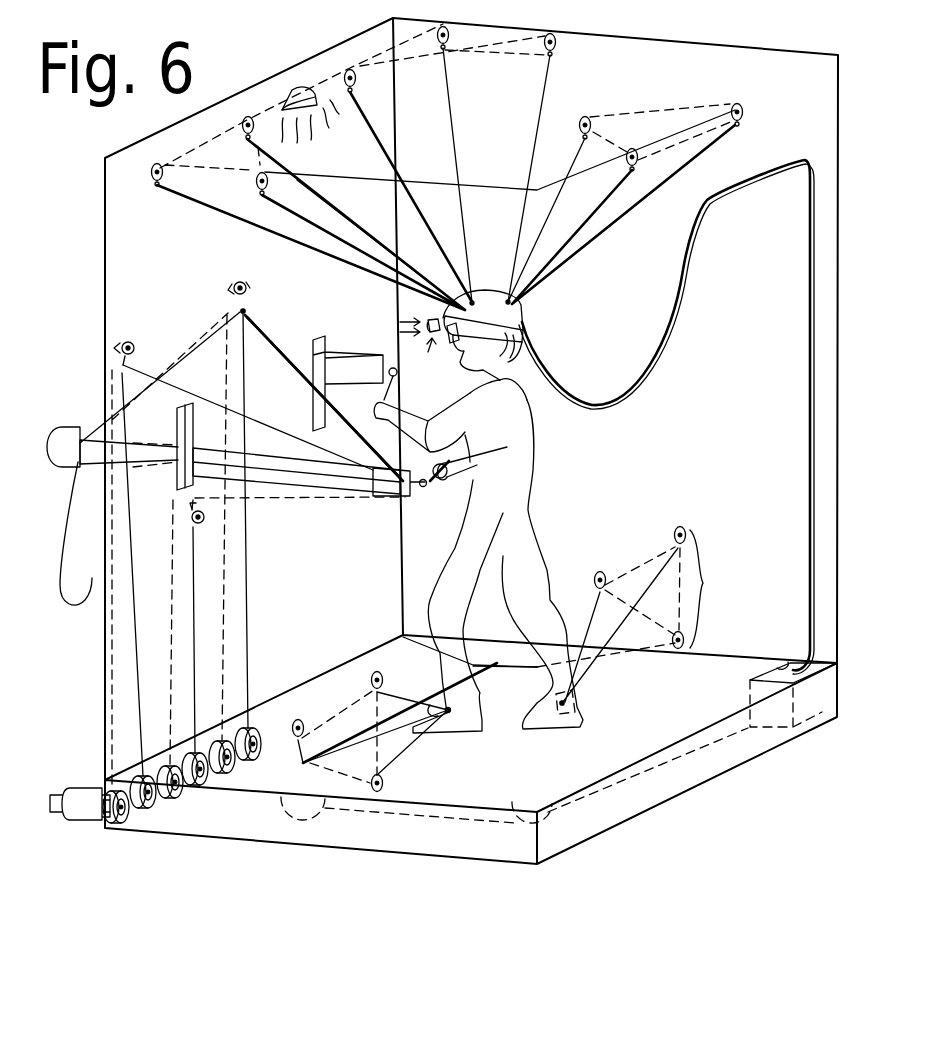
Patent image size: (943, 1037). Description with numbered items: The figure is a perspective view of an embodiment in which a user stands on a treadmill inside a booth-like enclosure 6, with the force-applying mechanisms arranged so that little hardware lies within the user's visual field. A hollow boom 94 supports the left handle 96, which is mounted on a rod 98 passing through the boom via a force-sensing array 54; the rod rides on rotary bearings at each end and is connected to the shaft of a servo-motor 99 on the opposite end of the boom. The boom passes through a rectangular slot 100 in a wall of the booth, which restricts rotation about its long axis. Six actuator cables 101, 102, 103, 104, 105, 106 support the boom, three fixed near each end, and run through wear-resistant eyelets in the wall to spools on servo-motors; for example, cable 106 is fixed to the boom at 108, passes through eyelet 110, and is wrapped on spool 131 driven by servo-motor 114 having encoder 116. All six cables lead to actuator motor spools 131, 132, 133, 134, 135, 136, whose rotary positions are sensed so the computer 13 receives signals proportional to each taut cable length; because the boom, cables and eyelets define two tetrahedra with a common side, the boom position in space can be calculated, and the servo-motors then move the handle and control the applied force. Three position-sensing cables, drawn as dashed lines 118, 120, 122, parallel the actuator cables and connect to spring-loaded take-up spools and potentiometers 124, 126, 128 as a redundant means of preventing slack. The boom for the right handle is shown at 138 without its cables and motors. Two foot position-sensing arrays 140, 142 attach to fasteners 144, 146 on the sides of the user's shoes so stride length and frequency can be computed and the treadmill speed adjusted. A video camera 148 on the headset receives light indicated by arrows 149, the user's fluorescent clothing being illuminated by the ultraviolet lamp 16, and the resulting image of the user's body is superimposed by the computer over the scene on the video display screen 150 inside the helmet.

The enclosure 6 is at (105, 228).
The computer 13 is at (773, 672).
The lamp 16 is at (292, 90).
The force-sensing array 54 is at (442, 480).
The hollow boom 94 is at (384, 495).
The handle 96 is at (443, 482).
The rod 98 is at (410, 498).
The servo-motor 99 is at (72, 428).
The rectangular slot 100 is at (177, 430).
The actuator cable 101 is at (250, 660).
The actuator cable 102 is at (240, 622).
The actuator cable 103 is at (188, 600).
The actuator cable 104 is at (167, 632).
The actuator cable 105 is at (110, 683).
The actuator cable 106 is at (130, 705).
The boom fixing point 108 is at (380, 498).
The eyelet 110 is at (127, 440).
The servo-motor 114 is at (78, 822).
The encoder 116 is at (62, 788).
The position-sensing cable 118 is at (300, 500).
The position-sensing cable 120 is at (204, 400).
The position-sensing cable 122 is at (247, 311).
The spring-loaded take-up spool and potentiometer 124 is at (199, 526).
The spring-loaded take-up spool and potentiometer 126 is at (140, 342).
The spring-loaded take-up spool and potentiometer 128 is at (238, 284).
The actuator motor spool 131 is at (118, 830).
The actuator motor spool 132 is at (140, 810).
The actuator motor spool 133 is at (180, 803).
The actuator motor spool 134 is at (220, 790).
The actuator motor spool 135 is at (215, 762).
The actuator motor spool 136 is at (254, 752).
The right-handle boom 138 is at (350, 350).
The position-sensing array 140 is at (676, 588).
The position-sensing array 142 is at (365, 673).
The fastener 144 is at (585, 707).
The fastener 146 is at (449, 718).
The video camera 148 is at (437, 352).
The arrows 149 is at (389, 330).
The video display screen 150 is at (521, 314).